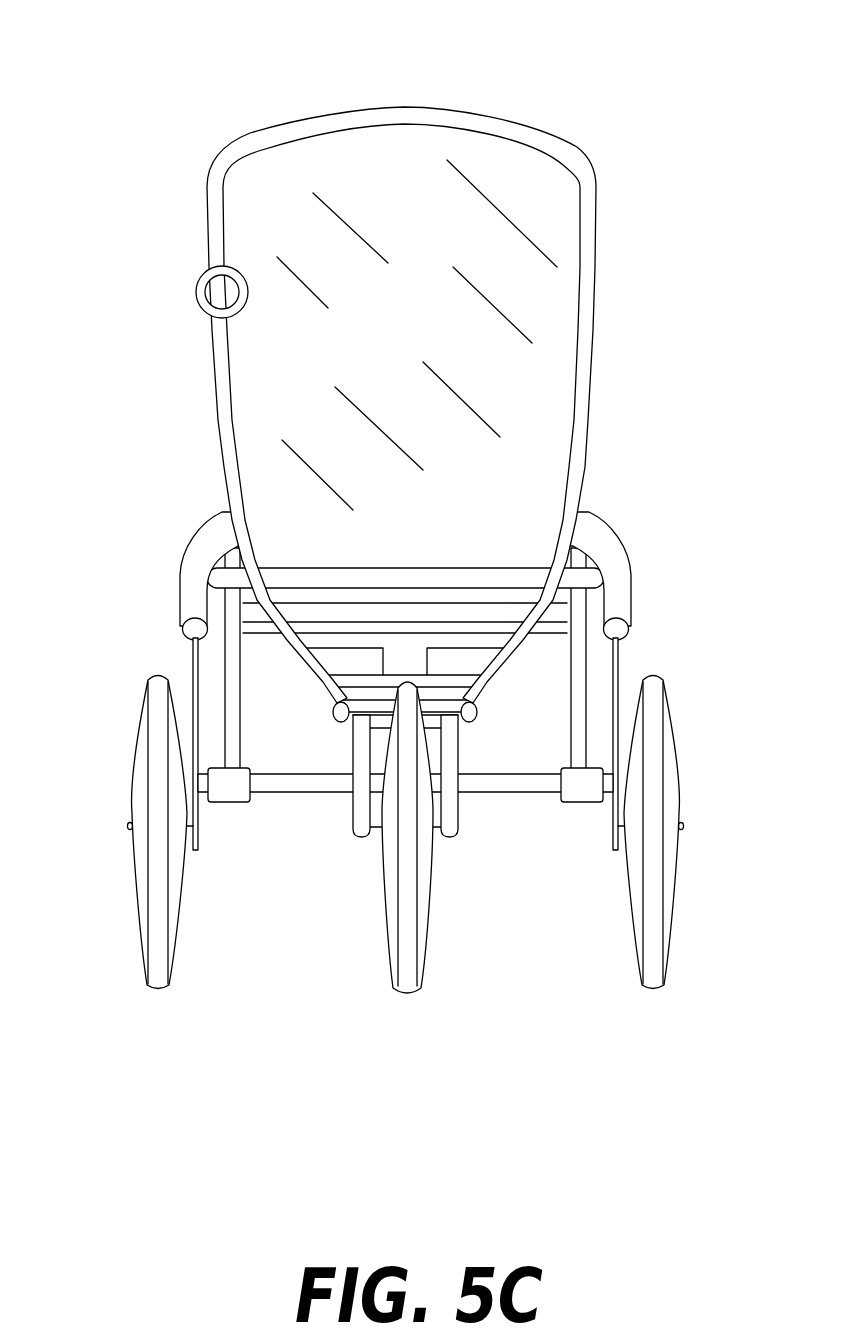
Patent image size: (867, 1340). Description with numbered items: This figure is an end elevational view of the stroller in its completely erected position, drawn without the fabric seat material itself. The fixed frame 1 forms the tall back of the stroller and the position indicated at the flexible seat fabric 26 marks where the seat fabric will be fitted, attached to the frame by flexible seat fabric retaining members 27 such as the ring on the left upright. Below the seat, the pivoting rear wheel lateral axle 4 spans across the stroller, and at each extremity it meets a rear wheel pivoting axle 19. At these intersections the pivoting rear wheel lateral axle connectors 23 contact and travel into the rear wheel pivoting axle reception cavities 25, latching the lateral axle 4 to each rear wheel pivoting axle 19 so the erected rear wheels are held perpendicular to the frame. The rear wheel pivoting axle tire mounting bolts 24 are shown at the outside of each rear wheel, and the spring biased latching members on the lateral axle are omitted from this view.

The fixed frame 1 is at (290, 125).
The pivoting rear wheel lateral axle 4 is at (318, 797).
The rear wheel pivoting axle 19 is at (183, 633).
The pivoting rear wheel lateral axle connector 23 is at (207, 803).
The rear wheel pivoting axle tire mounting bolt 24 is at (130, 827).
The rear wheel pivoting axle reception cavity 25 is at (203, 806).
The flexible seat fabric 26 is at (390, 306).
The flexible seat fabric retaining member 27 is at (200, 284).